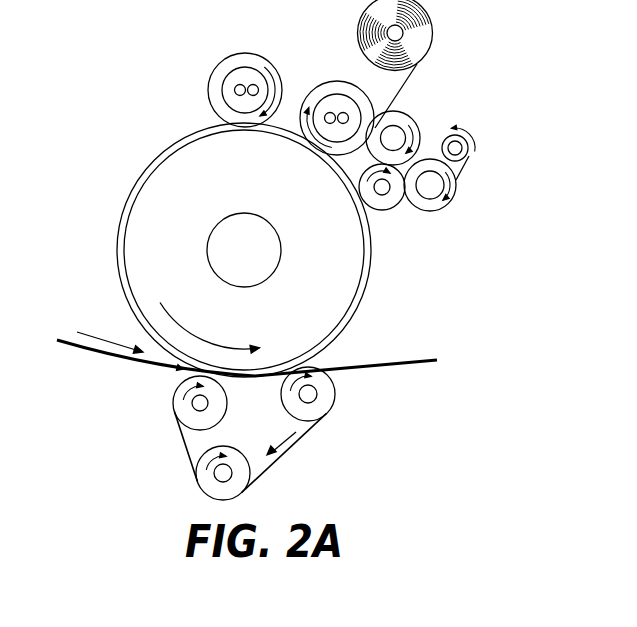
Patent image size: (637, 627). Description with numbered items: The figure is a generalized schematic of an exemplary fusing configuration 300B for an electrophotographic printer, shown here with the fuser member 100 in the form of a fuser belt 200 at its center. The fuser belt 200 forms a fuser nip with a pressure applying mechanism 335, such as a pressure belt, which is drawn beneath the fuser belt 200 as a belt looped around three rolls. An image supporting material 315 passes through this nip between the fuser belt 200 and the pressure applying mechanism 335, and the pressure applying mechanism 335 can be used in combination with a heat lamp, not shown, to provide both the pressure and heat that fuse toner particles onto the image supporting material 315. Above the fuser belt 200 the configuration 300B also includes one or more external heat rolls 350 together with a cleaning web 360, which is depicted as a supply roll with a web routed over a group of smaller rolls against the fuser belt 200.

The fusing configuration 300B is at (158, 46).
The fuser belt 200 is at (168, 148).
The drum core / imaging member 100 is at (257, 190).
The external heat rolls 350 is at (350, 86).
The cleaning web 360 is at (440, 98).
The image supporting material 315 is at (150, 362).
The pressure applying mechanism 335 is at (175, 452).